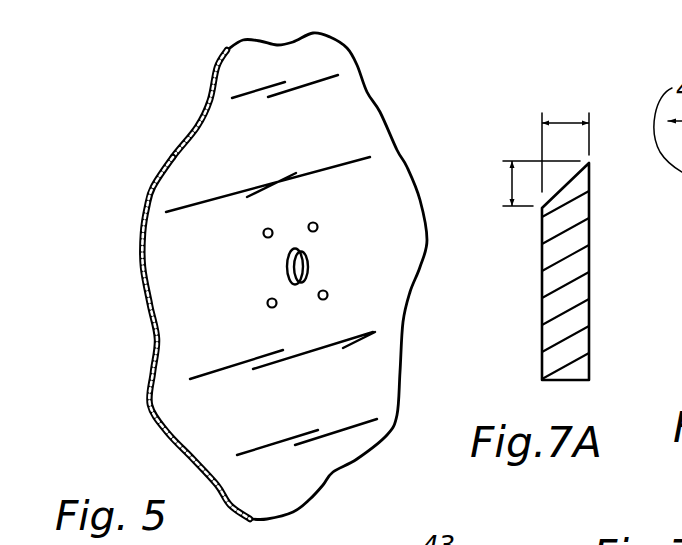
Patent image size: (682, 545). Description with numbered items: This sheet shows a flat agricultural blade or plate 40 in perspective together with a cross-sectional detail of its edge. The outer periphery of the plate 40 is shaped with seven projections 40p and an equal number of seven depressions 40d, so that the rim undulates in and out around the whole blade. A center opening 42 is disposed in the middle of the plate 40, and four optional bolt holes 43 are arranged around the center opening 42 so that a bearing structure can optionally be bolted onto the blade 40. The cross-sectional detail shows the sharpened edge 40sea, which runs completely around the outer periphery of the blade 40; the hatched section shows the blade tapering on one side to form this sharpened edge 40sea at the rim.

In FIG. 5, the flat agricultural blade 40 is at (422, 133).
In FIG. 5, the depressions 40d is at (200, 117).
In FIG. 5, the projections 40p is at (147, 198).
In FIG. 5, the center opening 42 is at (293, 268).
In FIG. 5, the bolt holes 43 is at (317, 225).
In FIG. 7A, the sharpened edge 40sea is at (555, 192).